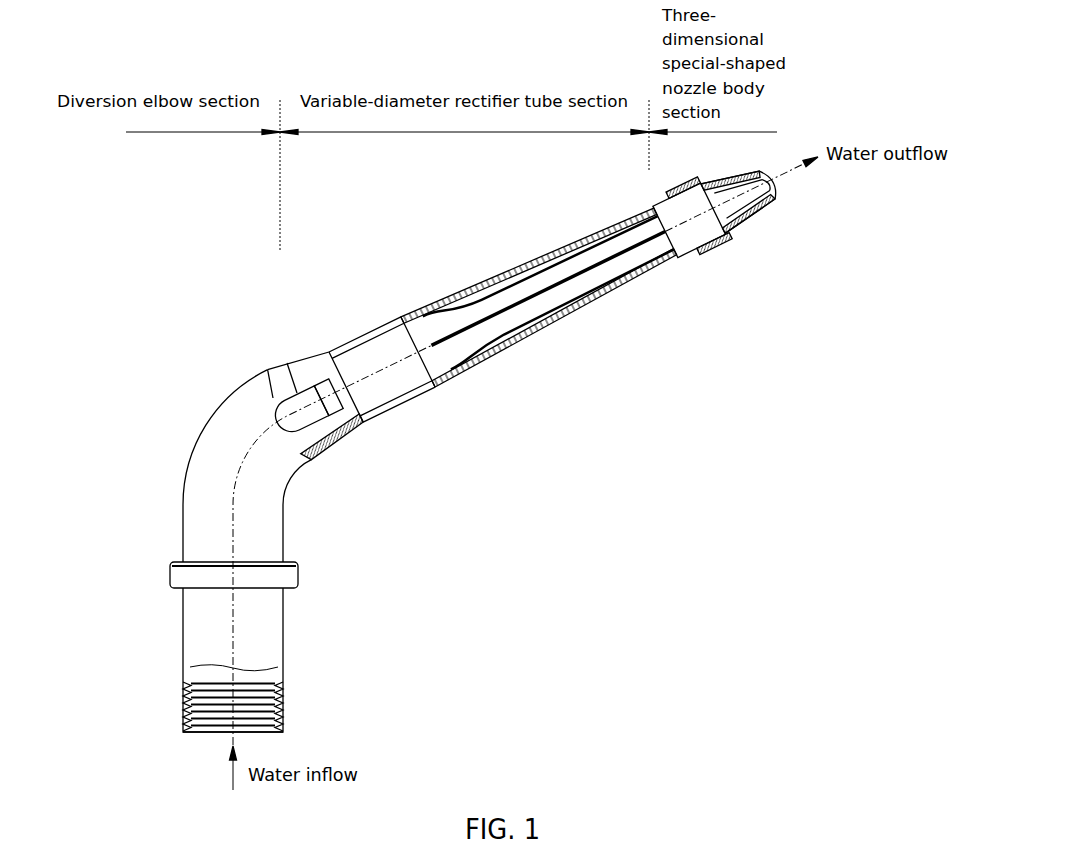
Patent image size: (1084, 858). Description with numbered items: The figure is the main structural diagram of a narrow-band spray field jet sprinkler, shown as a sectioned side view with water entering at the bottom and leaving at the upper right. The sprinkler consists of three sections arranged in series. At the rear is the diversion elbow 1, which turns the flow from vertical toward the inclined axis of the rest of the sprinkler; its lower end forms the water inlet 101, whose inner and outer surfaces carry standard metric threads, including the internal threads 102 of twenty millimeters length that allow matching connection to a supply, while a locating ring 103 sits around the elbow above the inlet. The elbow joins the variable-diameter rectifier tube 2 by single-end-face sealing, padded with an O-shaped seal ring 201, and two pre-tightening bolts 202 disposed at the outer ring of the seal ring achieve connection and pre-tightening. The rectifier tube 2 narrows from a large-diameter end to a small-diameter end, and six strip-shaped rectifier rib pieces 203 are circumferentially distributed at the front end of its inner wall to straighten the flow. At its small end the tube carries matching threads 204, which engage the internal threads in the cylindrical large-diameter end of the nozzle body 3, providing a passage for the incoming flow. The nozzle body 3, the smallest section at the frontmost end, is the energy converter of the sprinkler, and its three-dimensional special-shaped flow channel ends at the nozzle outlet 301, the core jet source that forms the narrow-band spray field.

The diversion elbow 1 is at (224, 448).
The water inlet 101 is at (232, 727).
The threads 102 is at (192, 692).
The locating ring 103 is at (181, 572).
The variable-diameter rectifier tube 2 is at (593, 255).
The O-shaped seal ring 201 is at (323, 450).
The pre-tightening bolts 202 is at (332, 395).
The rectifier rib pieces 203 is at (483, 295).
The matching threads 204 is at (700, 253).
The nozzle body 3 is at (766, 172).
The nozzle outlet 301 is at (768, 192).